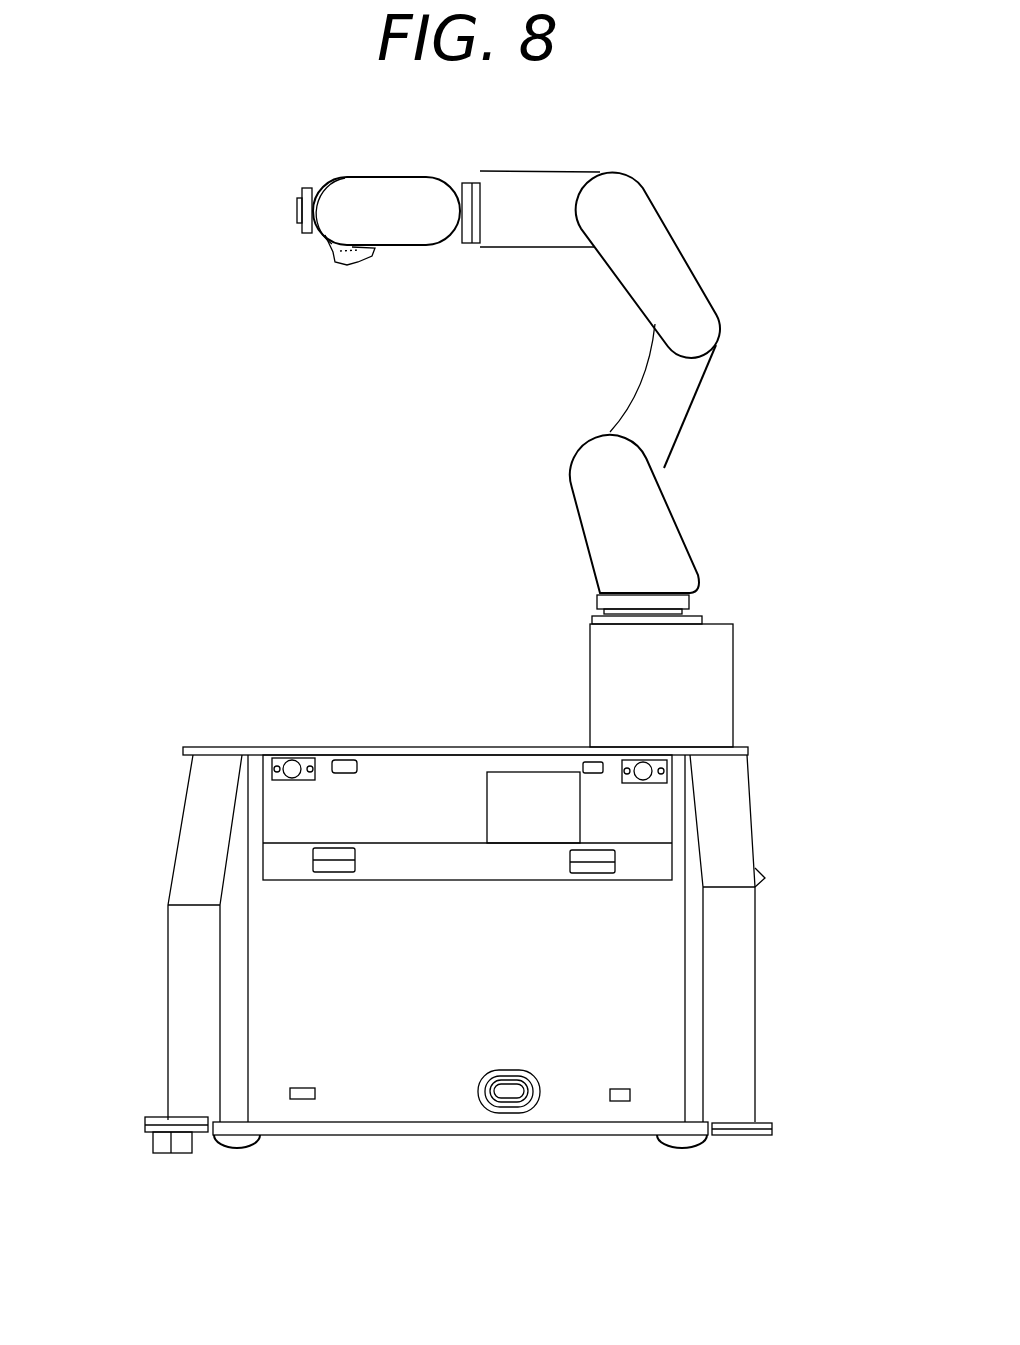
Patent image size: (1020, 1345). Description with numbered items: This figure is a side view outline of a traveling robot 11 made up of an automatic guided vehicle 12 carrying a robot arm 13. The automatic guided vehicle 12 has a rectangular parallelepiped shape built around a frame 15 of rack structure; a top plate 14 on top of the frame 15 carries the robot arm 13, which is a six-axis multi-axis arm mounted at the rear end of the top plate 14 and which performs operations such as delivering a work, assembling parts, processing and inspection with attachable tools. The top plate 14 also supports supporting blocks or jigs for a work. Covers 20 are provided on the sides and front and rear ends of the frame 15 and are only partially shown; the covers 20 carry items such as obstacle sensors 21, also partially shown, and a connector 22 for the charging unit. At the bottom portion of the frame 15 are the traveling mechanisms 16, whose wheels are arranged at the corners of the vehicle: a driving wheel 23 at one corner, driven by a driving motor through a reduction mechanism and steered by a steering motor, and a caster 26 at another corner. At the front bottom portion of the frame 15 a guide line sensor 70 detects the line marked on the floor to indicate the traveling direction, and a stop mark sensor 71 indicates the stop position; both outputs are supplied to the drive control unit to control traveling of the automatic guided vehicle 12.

The traveling robot 11 is at (720, 552).
The automatic guided vehicle 12 is at (483, 937).
The robot arm 13 is at (732, 312).
The top plate 14 is at (418, 747).
The frame 15 is at (585, 1135).
The traveling mechanism 16 is at (277, 1143).
The cover 20 is at (185, 831).
The obstacle sensor 21 is at (330, 872).
The connector 22 is at (503, 1103).
The driving wheel 23 is at (233, 1142).
The caster 26 is at (688, 1145).
The guide line sensor 70 is at (152, 1145).
The stop mark sensor 71 is at (175, 1153).